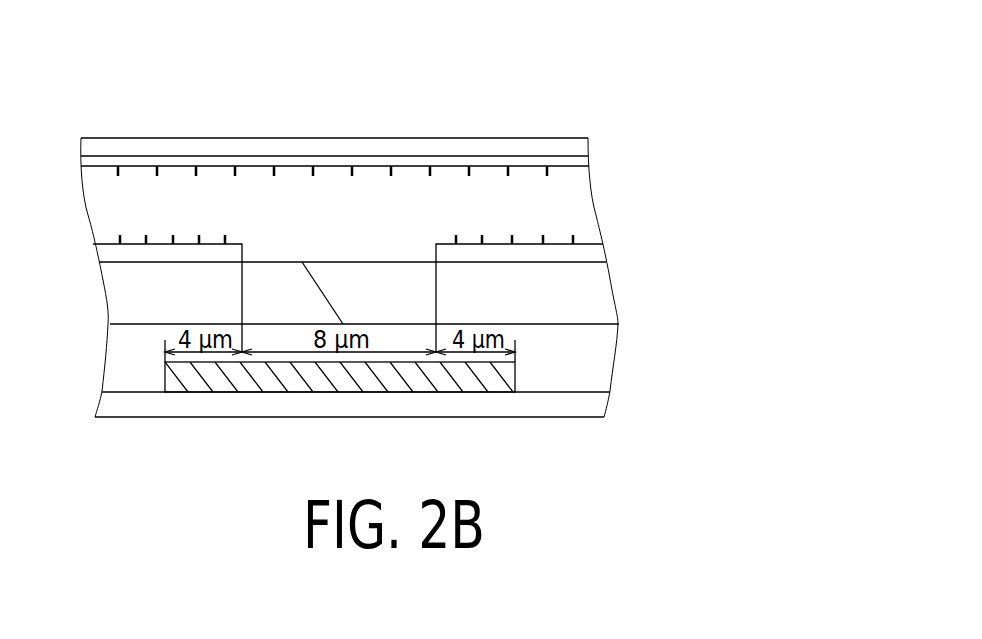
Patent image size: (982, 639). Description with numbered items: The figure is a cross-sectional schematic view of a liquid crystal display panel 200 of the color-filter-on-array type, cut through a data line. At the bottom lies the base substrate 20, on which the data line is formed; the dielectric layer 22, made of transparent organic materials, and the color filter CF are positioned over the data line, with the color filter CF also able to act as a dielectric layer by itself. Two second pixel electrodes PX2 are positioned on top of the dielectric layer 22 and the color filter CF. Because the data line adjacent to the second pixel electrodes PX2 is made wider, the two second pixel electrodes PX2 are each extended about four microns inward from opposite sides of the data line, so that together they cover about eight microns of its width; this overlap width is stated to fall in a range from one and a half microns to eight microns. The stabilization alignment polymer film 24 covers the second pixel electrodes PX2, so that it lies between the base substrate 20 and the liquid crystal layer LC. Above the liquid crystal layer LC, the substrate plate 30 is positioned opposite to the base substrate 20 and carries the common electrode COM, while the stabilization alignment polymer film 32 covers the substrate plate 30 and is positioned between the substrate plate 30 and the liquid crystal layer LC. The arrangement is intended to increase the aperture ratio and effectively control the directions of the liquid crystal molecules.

The display panel / pixel structure 200 is at (647, 72).
The substrate plate 30 is at (588, 149).
The common electrode COM is at (582, 163).
The stabilization alignment polymer film 32 is at (118, 172).
The liquid crystal layer LC is at (582, 208).
The stabilization alignment polymer film 24 is at (120, 240).
The second pixel electrode PX2 is at (100, 253).
The color filter CF is at (118, 300).
The dielectric layer 22 is at (607, 362).
The base substrate 20 is at (598, 408).